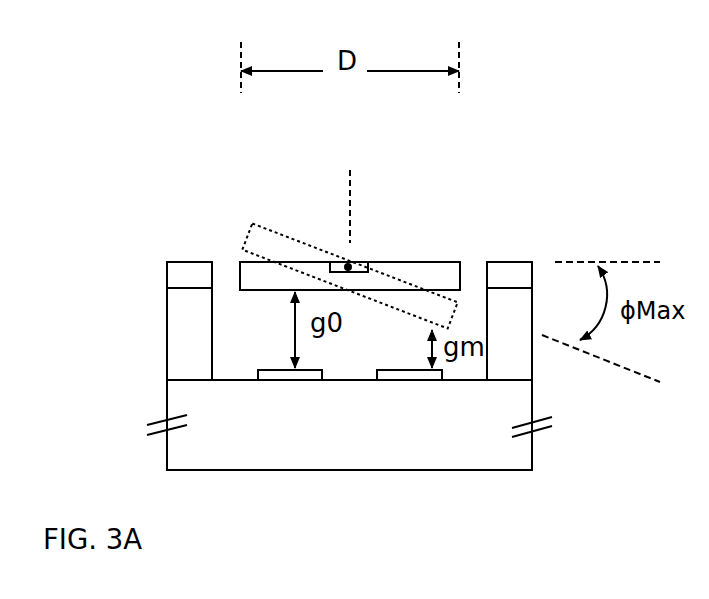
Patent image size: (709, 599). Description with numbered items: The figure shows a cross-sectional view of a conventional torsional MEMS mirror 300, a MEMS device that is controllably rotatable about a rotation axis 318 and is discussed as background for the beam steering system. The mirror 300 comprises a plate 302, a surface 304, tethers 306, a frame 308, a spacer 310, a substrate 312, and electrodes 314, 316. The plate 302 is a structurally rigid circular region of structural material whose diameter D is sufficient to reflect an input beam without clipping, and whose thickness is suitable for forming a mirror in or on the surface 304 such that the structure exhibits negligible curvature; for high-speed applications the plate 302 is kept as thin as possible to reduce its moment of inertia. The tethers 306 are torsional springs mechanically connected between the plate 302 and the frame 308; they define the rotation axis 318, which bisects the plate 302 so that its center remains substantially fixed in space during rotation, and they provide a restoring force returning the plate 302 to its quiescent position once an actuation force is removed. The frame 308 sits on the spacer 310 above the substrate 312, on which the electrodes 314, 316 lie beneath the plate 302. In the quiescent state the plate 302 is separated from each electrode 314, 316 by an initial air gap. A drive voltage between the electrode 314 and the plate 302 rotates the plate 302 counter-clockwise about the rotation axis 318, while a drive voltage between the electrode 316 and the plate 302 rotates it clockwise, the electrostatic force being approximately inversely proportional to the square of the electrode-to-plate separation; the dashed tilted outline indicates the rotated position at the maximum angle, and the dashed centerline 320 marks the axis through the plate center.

The mirror 300 is at (122, 133).
The plate 302 is at (297, 251).
The surface 304 is at (371, 236).
The tethers 306 is at (319, 242).
The frame 308 is at (297, 293).
The spacer 310 is at (297, 351).
The substrate 312 is at (228, 463).
The electrode 314 is at (318, 397).
The electrode 316 is at (438, 397).
The rotation axis 318 is at (274, 193).
The axis 320 is at (397, 200).